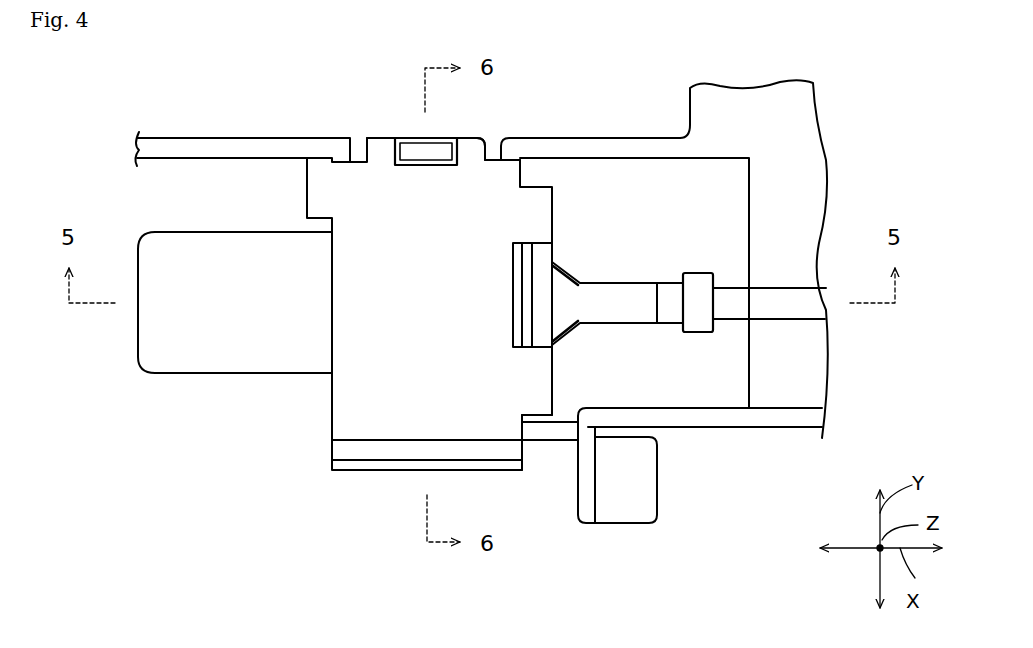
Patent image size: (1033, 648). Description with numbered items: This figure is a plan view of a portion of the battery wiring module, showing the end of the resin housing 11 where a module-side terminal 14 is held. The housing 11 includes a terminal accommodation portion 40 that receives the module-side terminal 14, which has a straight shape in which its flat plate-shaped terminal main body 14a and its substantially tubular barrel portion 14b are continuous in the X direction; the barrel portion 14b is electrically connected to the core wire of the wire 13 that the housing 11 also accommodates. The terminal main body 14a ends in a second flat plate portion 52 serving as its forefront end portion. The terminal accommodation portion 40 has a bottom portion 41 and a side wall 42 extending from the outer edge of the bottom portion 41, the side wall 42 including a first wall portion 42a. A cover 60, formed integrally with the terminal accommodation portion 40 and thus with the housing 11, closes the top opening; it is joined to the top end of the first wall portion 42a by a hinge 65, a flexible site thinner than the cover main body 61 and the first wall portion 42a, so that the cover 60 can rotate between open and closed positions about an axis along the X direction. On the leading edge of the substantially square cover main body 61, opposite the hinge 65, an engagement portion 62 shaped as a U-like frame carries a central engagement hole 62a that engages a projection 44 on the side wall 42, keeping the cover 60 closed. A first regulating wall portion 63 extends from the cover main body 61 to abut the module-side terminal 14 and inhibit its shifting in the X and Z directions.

The housing 11 is at (765, 395).
The wire 13 is at (805, 310).
The module-side terminal 14 is at (643, 278).
The terminal main body 14a is at (190, 362).
The barrel portion 14b is at (700, 323).
The terminal accommodation portion 40 is at (562, 167).
The bottom portion 41 is at (582, 177).
The side wall 42 is at (538, 435).
The first wall portion 42a is at (558, 433).
The projection 44 is at (417, 145).
The second flat plate portion 52 is at (165, 363).
The cover 60 is at (348, 408).
The cover main body 61 is at (347, 388).
The engagement portion 62 is at (472, 145).
The engagement hole 62a is at (405, 158).
The first regulating wall portion 63 is at (550, 257).
The hinge 65 is at (365, 468).